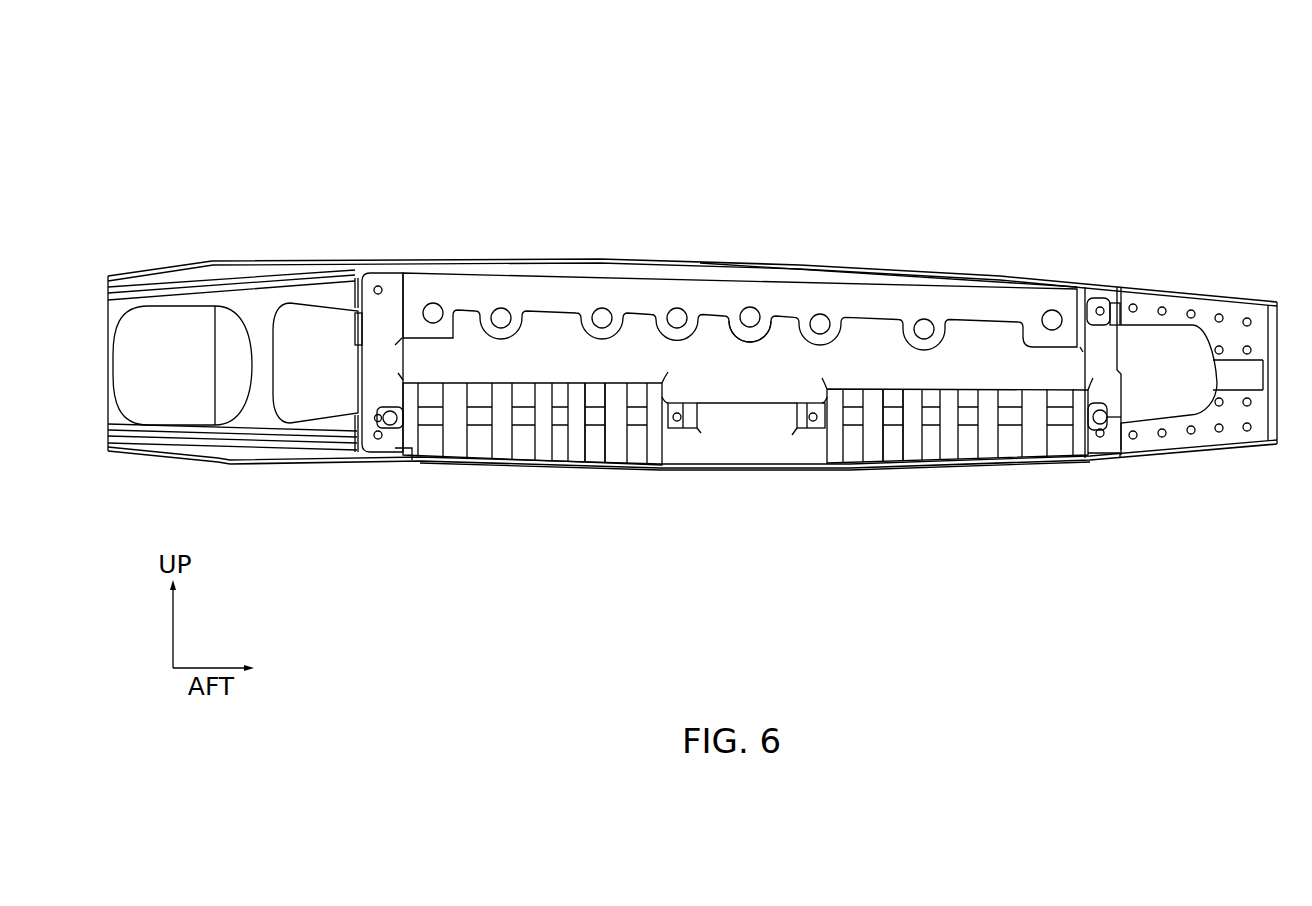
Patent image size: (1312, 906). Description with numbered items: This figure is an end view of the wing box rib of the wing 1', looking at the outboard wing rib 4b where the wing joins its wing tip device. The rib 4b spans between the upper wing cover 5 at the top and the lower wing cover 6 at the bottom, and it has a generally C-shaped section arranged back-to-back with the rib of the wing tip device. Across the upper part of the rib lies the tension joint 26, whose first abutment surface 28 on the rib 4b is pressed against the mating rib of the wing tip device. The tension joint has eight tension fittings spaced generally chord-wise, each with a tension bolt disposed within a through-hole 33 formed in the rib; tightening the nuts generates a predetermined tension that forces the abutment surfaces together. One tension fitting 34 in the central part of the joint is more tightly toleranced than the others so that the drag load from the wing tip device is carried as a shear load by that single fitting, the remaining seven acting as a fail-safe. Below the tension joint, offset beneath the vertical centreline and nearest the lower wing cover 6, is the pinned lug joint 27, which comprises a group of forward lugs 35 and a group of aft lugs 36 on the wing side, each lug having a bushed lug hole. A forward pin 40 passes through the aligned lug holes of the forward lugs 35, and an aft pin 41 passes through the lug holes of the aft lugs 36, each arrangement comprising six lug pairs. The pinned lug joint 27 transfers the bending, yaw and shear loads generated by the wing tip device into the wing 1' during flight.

The wing 1' is at (692, 252).
The upper wing cover 5 is at (377, 237).
The lower wing cover 6 is at (403, 485).
The tension joint 26 is at (1012, 240).
The pinned lug joint 27 is at (550, 495).
The first abutment surface 28 is at (641, 292).
The through-hole 33 is at (501, 308).
The tension fitting 34 is at (752, 306).
The group of forward lugs 35 is at (477, 498).
The group of aft lugs 36 is at (924, 495).
The forward pin 40 is at (594, 420).
The aft pin 41 is at (893, 423).
The outboard wing rib 4b is at (883, 297).